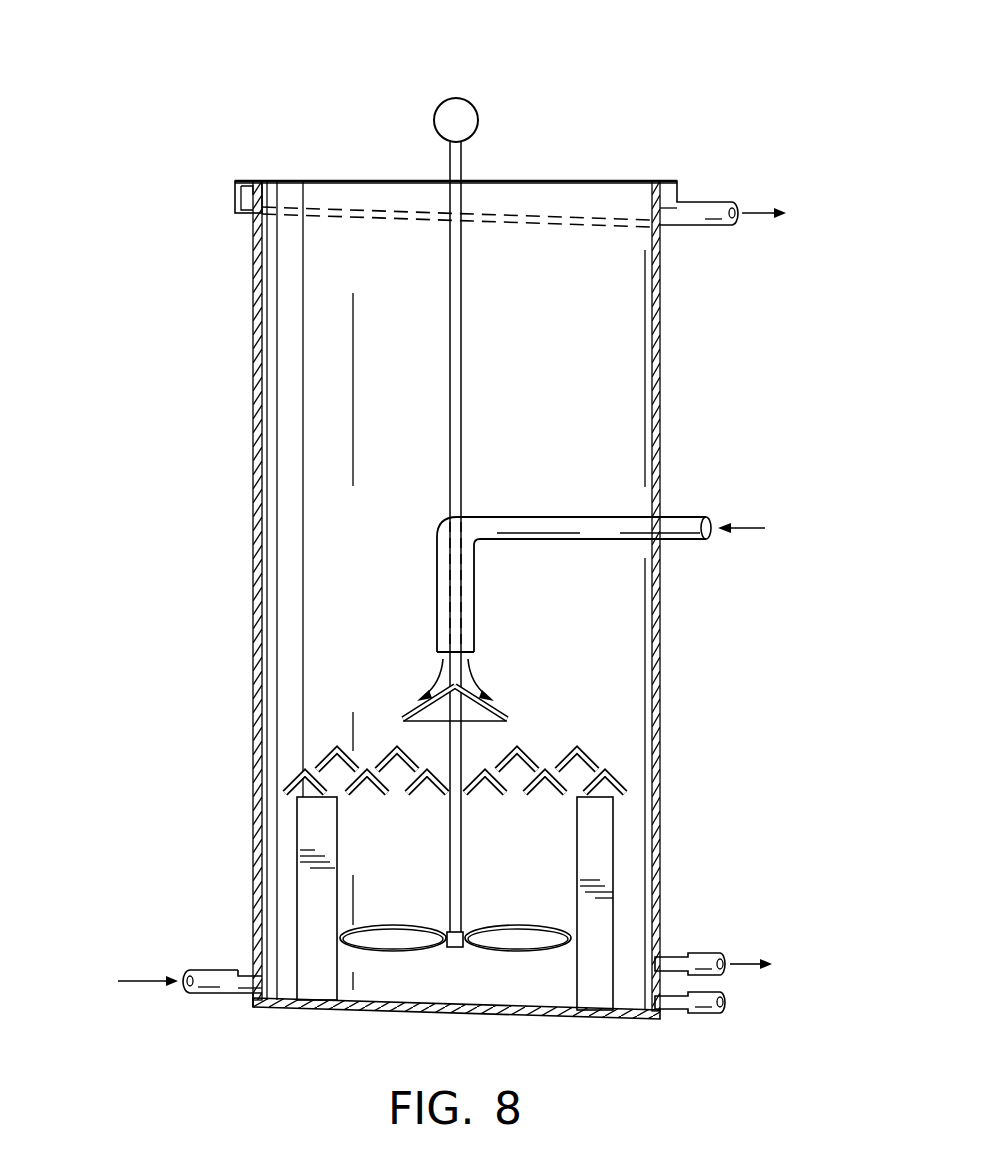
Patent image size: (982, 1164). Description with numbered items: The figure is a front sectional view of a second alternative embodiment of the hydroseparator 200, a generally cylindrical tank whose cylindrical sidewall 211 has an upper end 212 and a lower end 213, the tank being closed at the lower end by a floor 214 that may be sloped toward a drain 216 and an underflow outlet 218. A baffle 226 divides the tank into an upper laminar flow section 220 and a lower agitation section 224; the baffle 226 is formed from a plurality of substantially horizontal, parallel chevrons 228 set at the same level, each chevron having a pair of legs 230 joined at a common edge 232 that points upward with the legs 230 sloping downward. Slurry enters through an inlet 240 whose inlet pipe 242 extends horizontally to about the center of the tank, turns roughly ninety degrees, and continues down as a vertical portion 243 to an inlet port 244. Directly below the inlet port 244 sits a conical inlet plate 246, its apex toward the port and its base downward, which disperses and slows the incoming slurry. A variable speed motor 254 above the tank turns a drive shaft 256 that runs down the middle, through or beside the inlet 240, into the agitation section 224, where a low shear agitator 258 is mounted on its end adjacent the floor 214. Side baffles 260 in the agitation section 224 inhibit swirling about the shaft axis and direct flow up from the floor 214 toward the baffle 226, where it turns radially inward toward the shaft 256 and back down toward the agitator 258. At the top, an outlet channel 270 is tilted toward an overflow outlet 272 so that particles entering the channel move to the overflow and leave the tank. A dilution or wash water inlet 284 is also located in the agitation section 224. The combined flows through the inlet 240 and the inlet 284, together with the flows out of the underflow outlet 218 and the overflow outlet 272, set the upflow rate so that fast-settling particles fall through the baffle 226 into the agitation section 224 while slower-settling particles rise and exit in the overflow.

The hydroseparator 200 is at (170, 108).
The cylindrical sidewall 211 is at (252, 389).
The upper end 212 is at (256, 183).
The lower end 213 is at (252, 1001).
The floor 214 is at (512, 1012).
The drain 216 is at (665, 1006).
The underflow outlet 218 is at (673, 960).
The laminar flow section 220 is at (620, 407).
The agitation section 224 is at (550, 876).
The baffle 226 is at (635, 776).
The chevrons 228 is at (614, 762).
The legs 230 is at (356, 790).
The common edge 232 is at (548, 733).
The inlet 240 is at (425, 546).
The inlet pipe 242 is at (677, 525).
The vertical portion 243 is at (437, 596).
The inlet port 244 is at (474, 657).
The inlet plate 246 is at (422, 710).
The variable speed motor 254 is at (477, 112).
The drive shaft 256 is at (463, 375).
The low shear agitator 258 is at (397, 942).
The side baffles 260 is at (308, 840).
The outlet channel 270 is at (240, 199).
The overflow outlet 272 is at (685, 215).
The dilution water inlet 284 is at (253, 973).